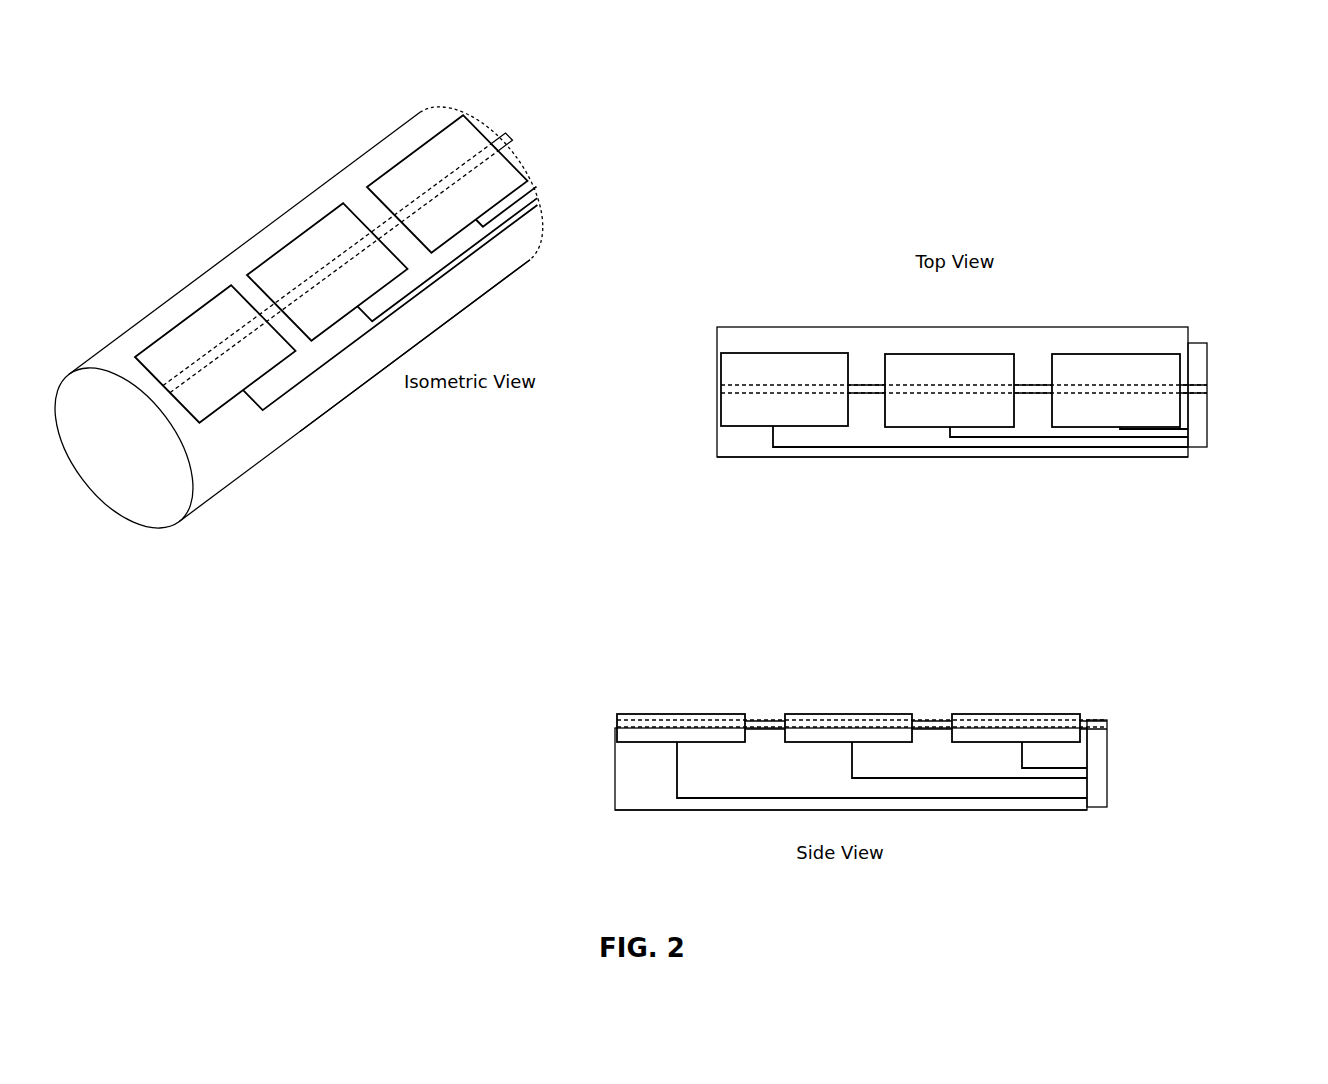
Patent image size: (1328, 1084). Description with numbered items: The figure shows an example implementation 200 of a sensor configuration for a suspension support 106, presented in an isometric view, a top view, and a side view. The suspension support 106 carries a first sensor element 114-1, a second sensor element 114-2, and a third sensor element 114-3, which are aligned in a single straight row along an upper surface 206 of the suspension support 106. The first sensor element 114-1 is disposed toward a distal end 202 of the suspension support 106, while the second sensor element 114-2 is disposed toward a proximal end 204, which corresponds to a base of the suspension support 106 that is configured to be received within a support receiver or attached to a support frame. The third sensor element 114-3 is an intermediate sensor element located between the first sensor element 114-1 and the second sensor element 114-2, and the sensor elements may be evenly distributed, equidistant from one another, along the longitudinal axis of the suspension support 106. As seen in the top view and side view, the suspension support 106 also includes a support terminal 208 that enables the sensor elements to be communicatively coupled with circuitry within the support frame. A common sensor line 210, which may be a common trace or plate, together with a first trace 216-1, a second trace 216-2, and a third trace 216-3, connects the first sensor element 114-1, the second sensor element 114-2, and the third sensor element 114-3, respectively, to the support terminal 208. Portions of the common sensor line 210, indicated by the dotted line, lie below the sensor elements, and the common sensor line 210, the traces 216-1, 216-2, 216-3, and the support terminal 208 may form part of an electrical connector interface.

The example implementation 200 is at (150, 66).
The suspension support 106 is at (155, 180).
The distal end 202 is at (163, 505).
The proximal end 204 is at (537, 247).
The upper surface 206 is at (552, 86).
The support terminal 208 is at (540, 160).
The common sensor line 210 is at (458, 162).
The first sensor element 114-1 is at (177, 355).
The second sensor element 114-2 is at (415, 182).
The third sensor element 114-3 is at (298, 252).
The first trace 216-1 is at (343, 397).
The second trace 216-2 is at (532, 197).
The third trace 216-3 is at (443, 273).